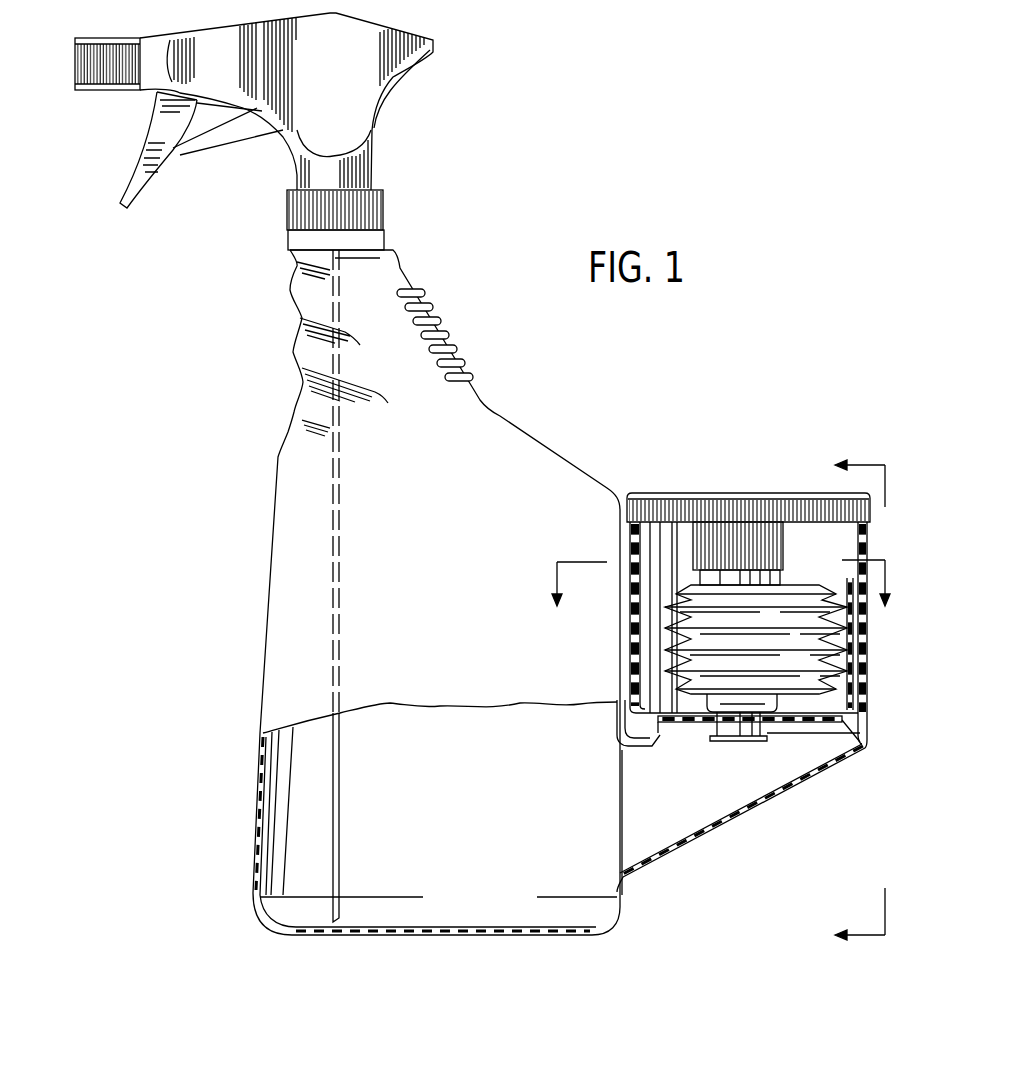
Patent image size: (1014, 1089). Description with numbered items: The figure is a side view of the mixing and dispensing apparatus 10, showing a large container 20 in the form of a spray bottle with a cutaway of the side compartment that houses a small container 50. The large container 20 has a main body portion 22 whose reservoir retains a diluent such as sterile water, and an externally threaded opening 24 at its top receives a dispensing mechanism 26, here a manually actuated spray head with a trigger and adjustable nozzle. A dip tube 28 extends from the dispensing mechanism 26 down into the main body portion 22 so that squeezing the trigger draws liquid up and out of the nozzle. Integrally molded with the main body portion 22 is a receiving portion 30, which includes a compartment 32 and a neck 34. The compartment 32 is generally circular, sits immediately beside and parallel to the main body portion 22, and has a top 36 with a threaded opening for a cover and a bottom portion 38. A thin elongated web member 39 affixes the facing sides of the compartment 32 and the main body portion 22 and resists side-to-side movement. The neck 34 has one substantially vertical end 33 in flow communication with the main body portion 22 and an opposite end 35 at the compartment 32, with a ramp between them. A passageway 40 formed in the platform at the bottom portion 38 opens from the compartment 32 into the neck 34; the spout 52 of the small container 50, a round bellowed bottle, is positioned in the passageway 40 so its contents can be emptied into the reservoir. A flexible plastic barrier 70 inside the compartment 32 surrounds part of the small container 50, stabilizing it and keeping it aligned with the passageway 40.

The mixing and dispensing apparatus 10 is at (515, 83).
The large container 20 is at (484, 396).
The main body portion 22 is at (444, 525).
The opening 24 is at (288, 241).
The dispensing mechanism 26 is at (346, 70).
The dip tube 28 is at (340, 773).
The receiving portion 30 is at (806, 786).
The compartment 32 is at (863, 664).
The neck end 33 is at (633, 888).
The neck 34 is at (692, 845).
The opposite neck end 35 is at (867, 747).
The top 36 is at (721, 493).
The bottom portion 38 is at (850, 718).
The web member 39 is at (620, 656).
The passageway 40 is at (785, 714).
The small container 50 is at (673, 593).
The spout 52 is at (730, 725).
The flexible plastic barrier 70 is at (800, 576).